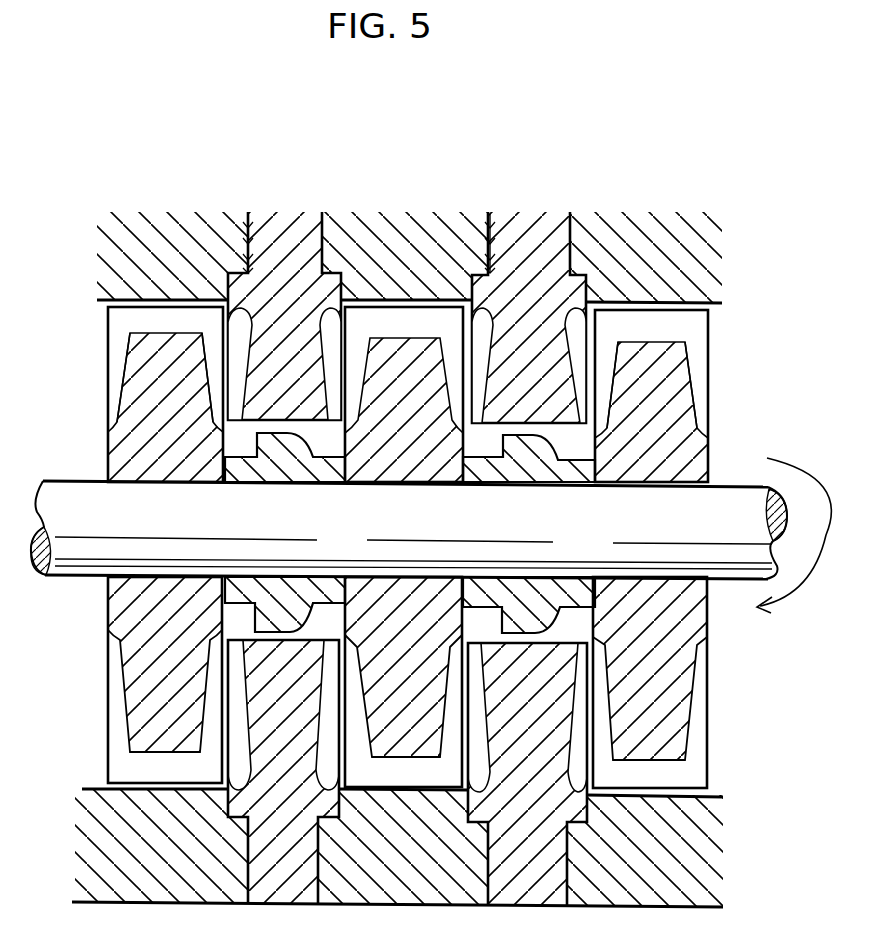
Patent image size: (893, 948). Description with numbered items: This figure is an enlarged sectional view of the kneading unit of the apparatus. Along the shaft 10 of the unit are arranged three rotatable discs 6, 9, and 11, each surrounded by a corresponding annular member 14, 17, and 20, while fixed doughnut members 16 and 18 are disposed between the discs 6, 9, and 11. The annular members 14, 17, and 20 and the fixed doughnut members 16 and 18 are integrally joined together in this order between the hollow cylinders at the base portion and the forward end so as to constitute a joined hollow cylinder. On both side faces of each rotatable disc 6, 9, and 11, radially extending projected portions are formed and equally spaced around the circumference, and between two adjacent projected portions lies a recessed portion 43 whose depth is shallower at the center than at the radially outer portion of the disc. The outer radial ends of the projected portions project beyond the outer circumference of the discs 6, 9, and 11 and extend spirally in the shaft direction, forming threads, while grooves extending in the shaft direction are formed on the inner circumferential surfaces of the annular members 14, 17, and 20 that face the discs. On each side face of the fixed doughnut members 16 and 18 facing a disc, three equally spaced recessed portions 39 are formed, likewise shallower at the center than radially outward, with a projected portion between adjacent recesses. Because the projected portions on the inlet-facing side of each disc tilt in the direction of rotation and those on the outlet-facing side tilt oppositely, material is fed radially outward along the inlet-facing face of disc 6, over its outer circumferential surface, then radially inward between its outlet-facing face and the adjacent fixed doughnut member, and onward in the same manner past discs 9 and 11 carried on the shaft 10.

The annular member 17 is at (447, 222).
The annular member 14 is at (667, 278).
The fixed doughnut member 18 is at (260, 262).
The fixed doughnut member 16 is at (550, 256).
The annular member 20 is at (248, 228).
The recessed portion 39 is at (328, 356).
The rotatable disc 11 is at (137, 365).
The rotatable disc 9 is at (402, 348).
The rotatable disc 6 is at (672, 372).
The recessed portion 43 is at (214, 360).
The shaft 10 is at (305, 570).